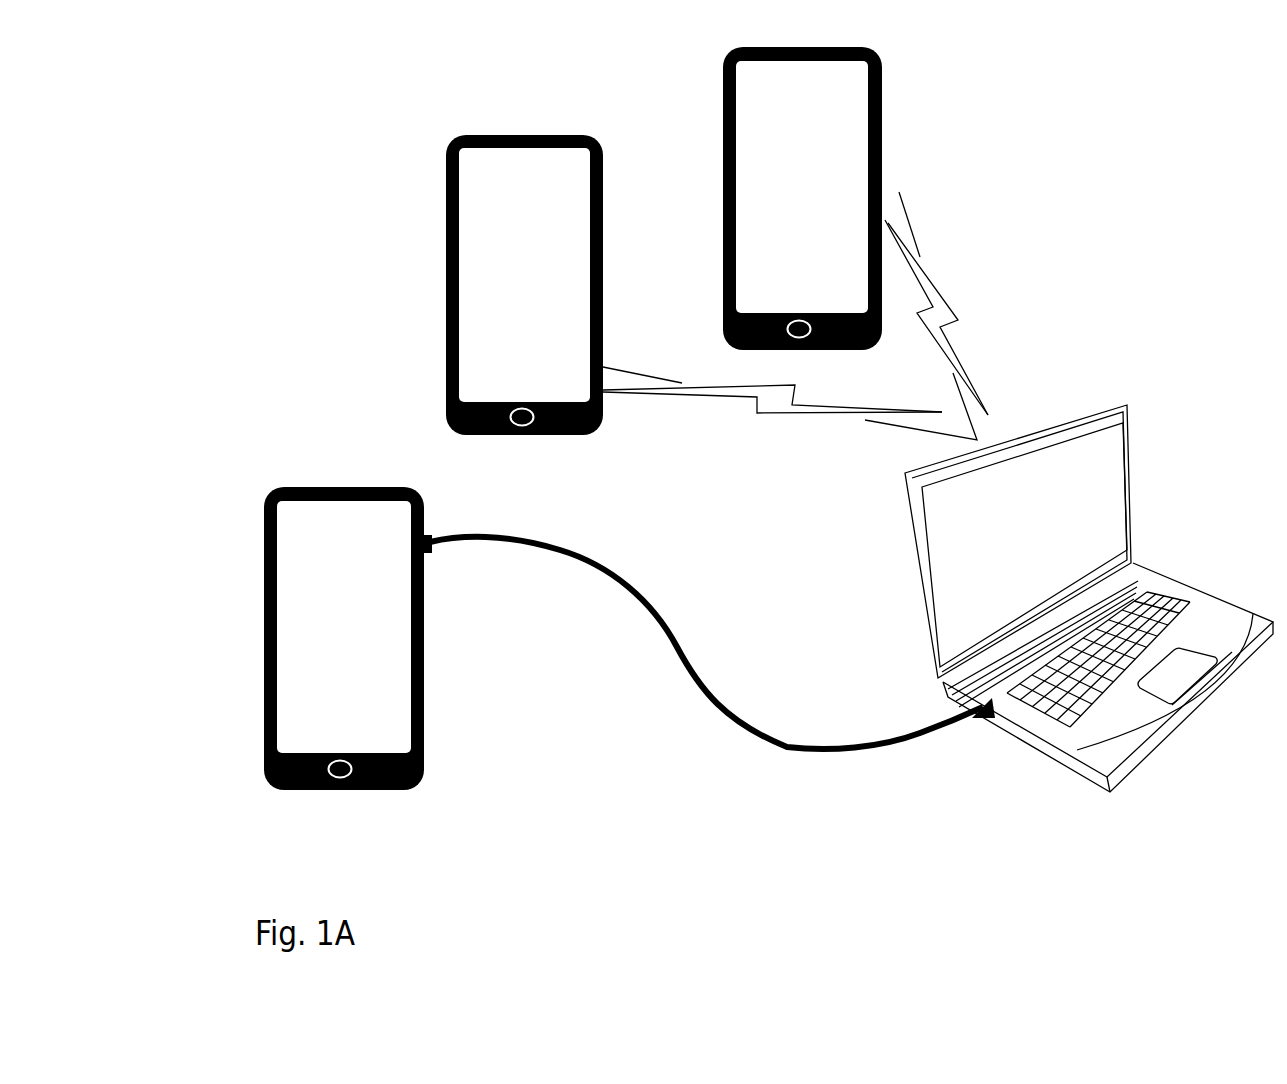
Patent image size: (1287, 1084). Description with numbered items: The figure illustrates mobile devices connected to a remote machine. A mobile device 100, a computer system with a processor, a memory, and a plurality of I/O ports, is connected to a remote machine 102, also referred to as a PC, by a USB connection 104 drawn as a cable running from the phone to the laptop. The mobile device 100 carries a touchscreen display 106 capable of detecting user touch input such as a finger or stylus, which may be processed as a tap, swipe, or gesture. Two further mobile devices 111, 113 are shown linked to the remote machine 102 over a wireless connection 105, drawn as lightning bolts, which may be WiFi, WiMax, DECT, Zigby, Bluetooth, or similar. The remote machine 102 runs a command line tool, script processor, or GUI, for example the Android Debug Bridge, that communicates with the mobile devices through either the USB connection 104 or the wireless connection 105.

The mobile device 100 is at (253, 650).
The remote machine 102 is at (920, 573).
The USB connection 104 is at (687, 667).
The wireless connection 105 is at (785, 427).
The touchscreen display 106 is at (320, 542).
The mobile device 111 is at (447, 233).
The mobile device 113 is at (723, 107).